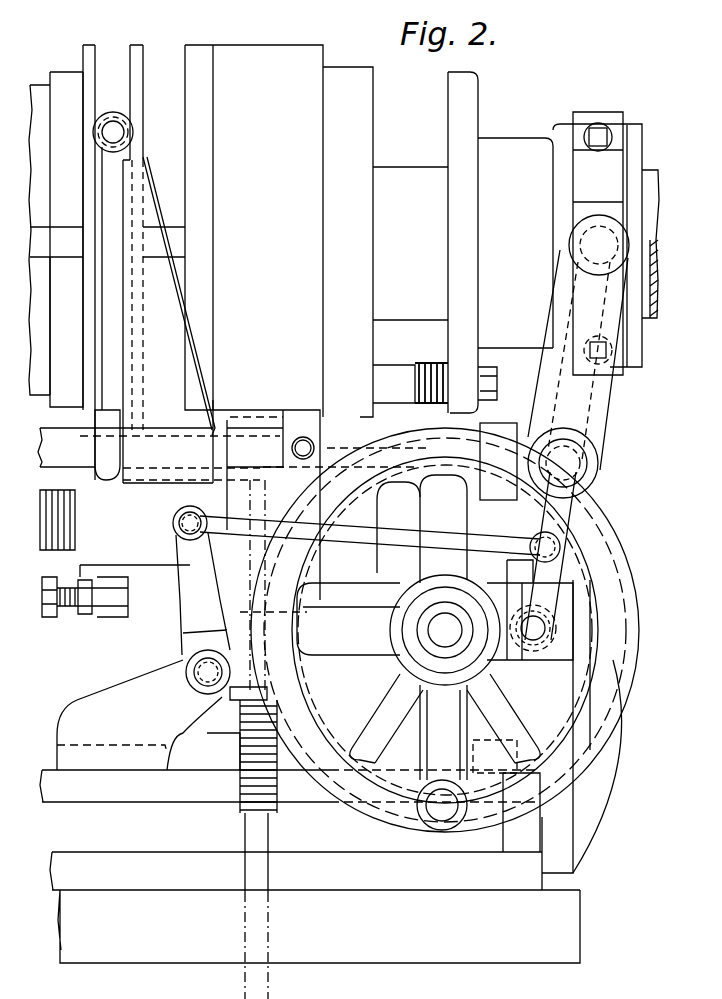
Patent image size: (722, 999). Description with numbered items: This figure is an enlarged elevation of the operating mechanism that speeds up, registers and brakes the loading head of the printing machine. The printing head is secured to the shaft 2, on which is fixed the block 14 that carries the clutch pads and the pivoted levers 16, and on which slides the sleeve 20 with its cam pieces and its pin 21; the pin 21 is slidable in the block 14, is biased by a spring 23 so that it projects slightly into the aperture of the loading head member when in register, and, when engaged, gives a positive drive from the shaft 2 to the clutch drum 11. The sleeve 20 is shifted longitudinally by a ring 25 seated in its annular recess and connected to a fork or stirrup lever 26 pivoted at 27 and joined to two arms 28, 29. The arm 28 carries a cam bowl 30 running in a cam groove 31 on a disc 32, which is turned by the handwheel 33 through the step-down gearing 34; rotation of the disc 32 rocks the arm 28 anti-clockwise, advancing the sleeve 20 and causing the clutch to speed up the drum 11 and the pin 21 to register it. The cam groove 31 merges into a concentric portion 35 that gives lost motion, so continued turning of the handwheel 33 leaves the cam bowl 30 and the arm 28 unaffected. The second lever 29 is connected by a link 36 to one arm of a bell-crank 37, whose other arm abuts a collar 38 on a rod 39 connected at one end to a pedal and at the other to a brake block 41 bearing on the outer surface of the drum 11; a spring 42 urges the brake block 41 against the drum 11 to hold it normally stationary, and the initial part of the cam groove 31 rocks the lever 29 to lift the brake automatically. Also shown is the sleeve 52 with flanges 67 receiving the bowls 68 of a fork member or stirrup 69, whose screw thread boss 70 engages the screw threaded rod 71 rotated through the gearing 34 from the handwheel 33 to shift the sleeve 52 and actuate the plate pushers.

The shaft 2 is at (449, 242).
The clutch drum 11 is at (254, 231).
The block 14 is at (385, 242).
The levers 16 is at (57, 180).
The sleeve 20 is at (568, 245).
The pin 21 is at (394, 384).
The spring 23 is at (433, 364).
The ring 25 is at (598, 243).
The fork or stirrup lever 26 is at (565, 330).
The pivot 27 is at (585, 464).
The arm 28 is at (567, 602).
The second lever 29 is at (562, 545).
The cam bowl 30 is at (523, 666).
The cam groove 31 is at (576, 637).
The disc 32 is at (614, 722).
The handwheel 33 is at (382, 806).
The step-down gearing 34 is at (382, 583).
The concentric portion 35 is at (325, 683).
The link 36 is at (398, 535).
The bell-crank 37 is at (183, 625).
The collar 38 is at (228, 705).
The rod 39 is at (265, 832).
The brake block 41 is at (230, 450).
The spring 42 is at (240, 810).
The sleeve 52 is at (66, 239).
The flanges 67 is at (138, 58).
The bowls 68 is at (120, 132).
The fork member or stirrup 69 is at (172, 316).
The screw thread boss 70 is at (170, 523).
The screw threaded rod 71 is at (60, 483).